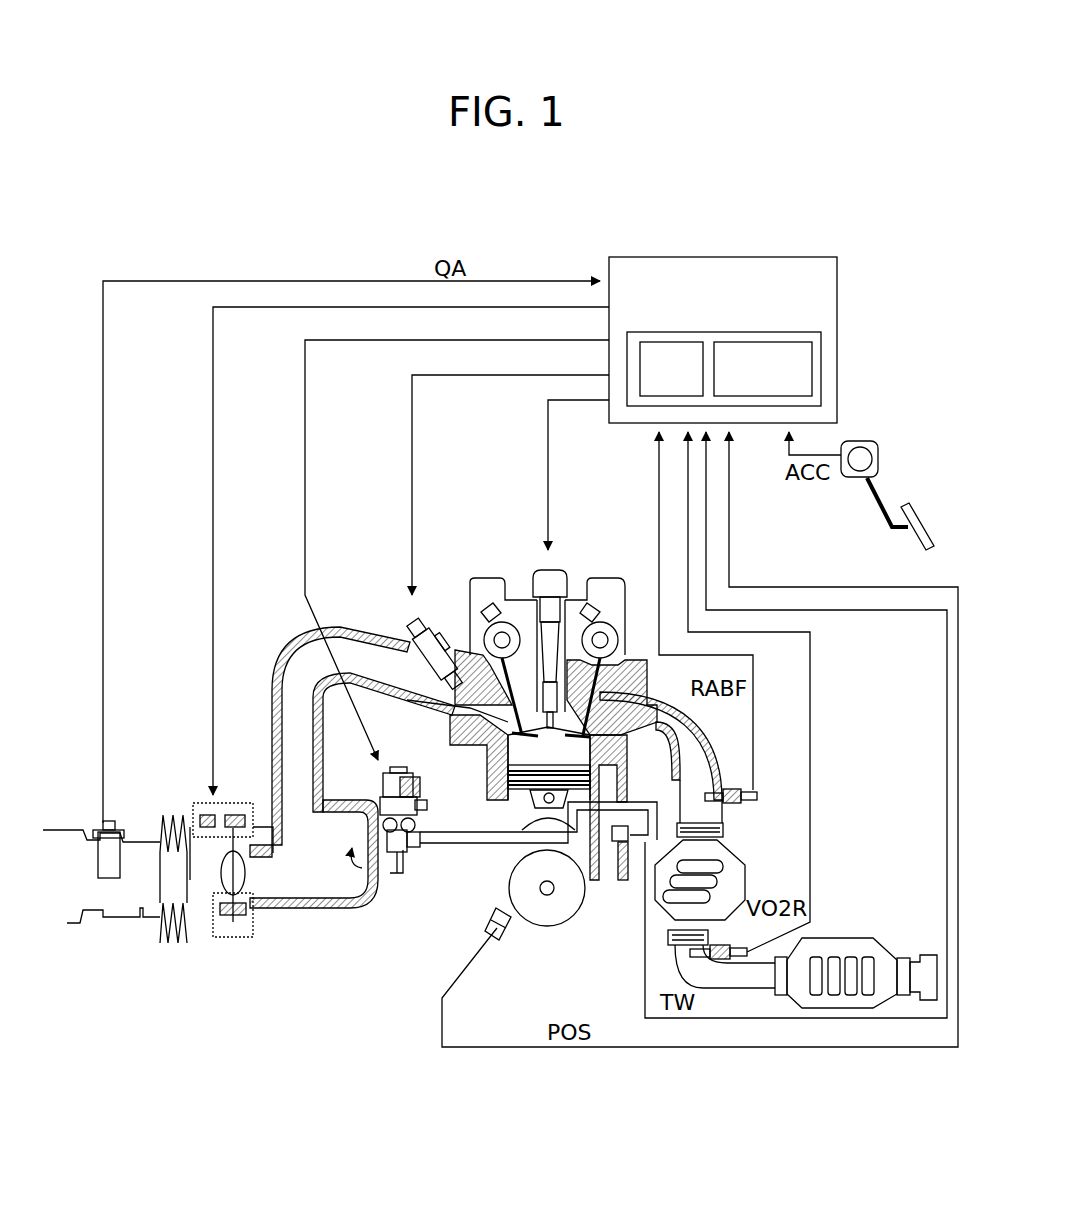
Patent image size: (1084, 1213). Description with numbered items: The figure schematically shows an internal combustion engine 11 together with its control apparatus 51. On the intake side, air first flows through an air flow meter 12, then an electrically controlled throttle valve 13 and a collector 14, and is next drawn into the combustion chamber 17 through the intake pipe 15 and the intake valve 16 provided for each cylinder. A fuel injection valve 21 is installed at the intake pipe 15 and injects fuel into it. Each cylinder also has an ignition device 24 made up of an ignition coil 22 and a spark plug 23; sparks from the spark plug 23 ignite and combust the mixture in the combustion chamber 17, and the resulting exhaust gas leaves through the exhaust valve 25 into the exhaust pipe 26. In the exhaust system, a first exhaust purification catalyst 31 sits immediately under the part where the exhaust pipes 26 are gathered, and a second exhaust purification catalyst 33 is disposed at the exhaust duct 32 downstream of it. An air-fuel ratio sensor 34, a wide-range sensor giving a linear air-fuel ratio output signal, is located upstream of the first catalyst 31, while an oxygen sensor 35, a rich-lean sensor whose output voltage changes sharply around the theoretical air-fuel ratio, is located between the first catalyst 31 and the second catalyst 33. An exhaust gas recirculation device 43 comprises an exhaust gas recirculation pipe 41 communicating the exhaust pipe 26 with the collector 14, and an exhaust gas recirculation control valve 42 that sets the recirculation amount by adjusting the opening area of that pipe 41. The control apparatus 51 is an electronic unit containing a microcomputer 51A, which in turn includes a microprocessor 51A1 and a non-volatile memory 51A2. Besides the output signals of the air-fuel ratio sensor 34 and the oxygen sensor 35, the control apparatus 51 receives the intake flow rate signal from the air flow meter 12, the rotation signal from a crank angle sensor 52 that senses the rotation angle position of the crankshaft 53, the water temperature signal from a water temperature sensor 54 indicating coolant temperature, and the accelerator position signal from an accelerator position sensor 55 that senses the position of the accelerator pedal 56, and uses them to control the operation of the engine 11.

The internal combustion engine 11 is at (600, 535).
The air flow meter 12 is at (112, 880).
The electrically controlled throttle valve 13 is at (233, 927).
The collector 14 is at (330, 840).
The intake pipe 15 is at (423, 687).
The intake valve 16 is at (520, 748).
The combustion chamber 17 is at (549, 746).
The fuel injection valve 21 is at (407, 615).
The ignition coil 22 is at (535, 575).
The spark plug 23 is at (492, 600).
The ignition device 24 is at (535, 604).
The exhaust valve 25 is at (596, 738).
The exhaust pipe 26 is at (648, 702).
The first exhaust purification catalyst 31 is at (746, 864).
The exhaust duct 32 is at (763, 980).
The second exhaust purification catalyst 33 is at (852, 946).
The air-fuel ratio sensor 34 is at (757, 790).
The oxygen sensor 35 is at (733, 962).
The exhaust gas recirculation pipe 41 is at (490, 845).
The exhaust gas recirculation control valve 42 is at (425, 805).
The exhaust gas recirculation device 43 is at (518, 860).
The control apparatus 51 is at (645, 257).
The microcomputer 51A is at (773, 330).
The microprocessor 51A1 is at (640, 364).
The non-volatile memory 51A2 is at (812, 358).
The crank angle sensor 52 is at (513, 925).
The crankshaft 53 is at (556, 890).
The water temperature sensor 54 is at (610, 843).
The accelerator position sensor 55 is at (868, 441).
The accelerator pedal 56 is at (917, 525).